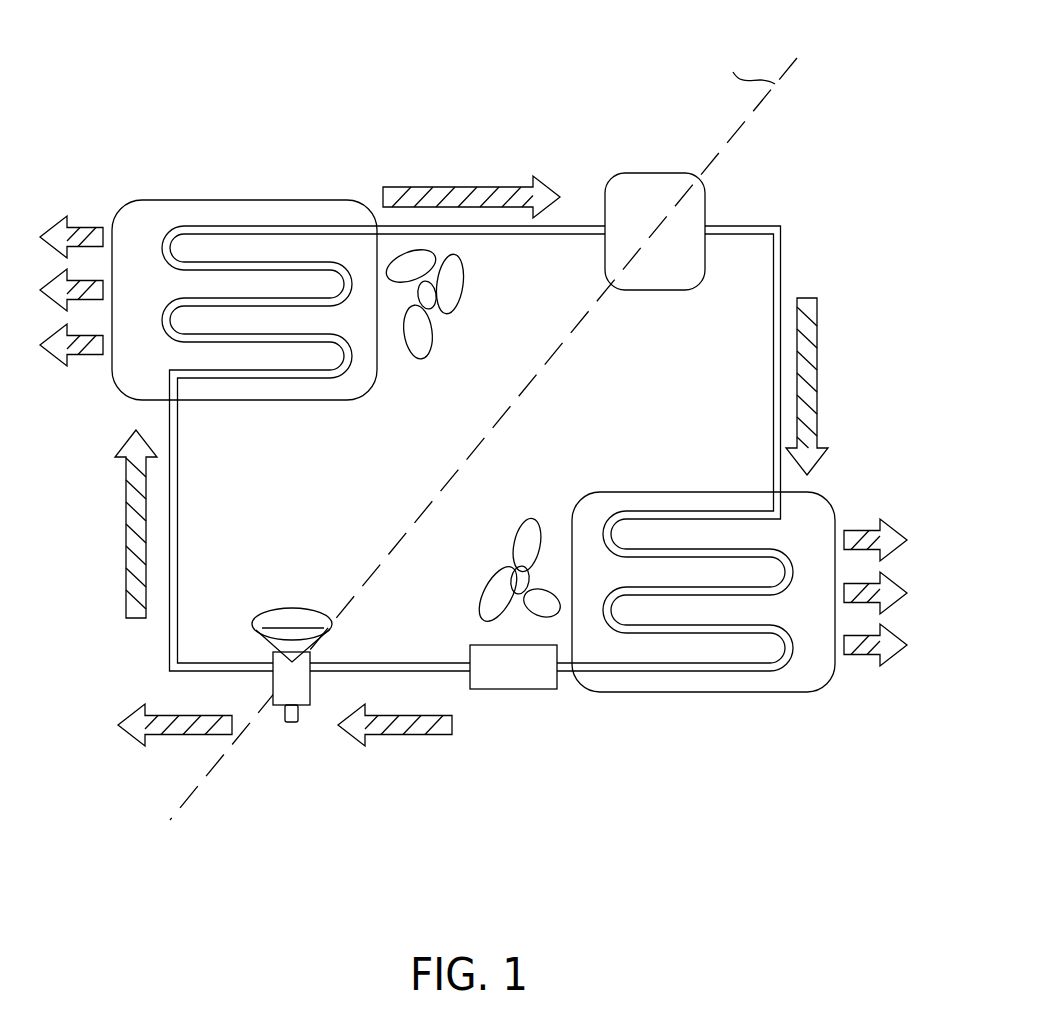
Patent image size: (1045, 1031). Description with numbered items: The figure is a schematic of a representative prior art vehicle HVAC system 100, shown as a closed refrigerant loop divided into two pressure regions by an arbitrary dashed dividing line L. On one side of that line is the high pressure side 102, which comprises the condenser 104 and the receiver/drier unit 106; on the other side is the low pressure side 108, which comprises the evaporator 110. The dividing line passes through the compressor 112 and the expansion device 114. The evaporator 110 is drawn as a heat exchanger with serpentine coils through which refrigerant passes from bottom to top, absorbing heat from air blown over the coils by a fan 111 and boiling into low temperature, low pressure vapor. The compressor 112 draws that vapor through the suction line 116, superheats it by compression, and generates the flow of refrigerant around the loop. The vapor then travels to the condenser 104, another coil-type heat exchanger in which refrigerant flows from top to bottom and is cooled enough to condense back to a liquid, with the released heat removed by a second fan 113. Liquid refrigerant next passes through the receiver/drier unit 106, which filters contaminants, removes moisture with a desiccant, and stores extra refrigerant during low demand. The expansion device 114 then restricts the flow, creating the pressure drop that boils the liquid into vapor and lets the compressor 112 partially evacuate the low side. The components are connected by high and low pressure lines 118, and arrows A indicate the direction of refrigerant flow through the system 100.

The HVAC system 100 is at (480, 98).
The high pressure side 102 is at (627, 702).
The condenser 104 is at (783, 693).
The receiver/drier unit 106 is at (500, 686).
The low pressure side 108 is at (153, 198).
The evaporator 110 is at (253, 208).
The fan 111 is at (423, 353).
The compressor 112 is at (706, 202).
The fan 113 is at (522, 523).
The expansion device 114 is at (292, 724).
The suction line 116 is at (542, 235).
The high and low pressure lines 118 is at (783, 270).